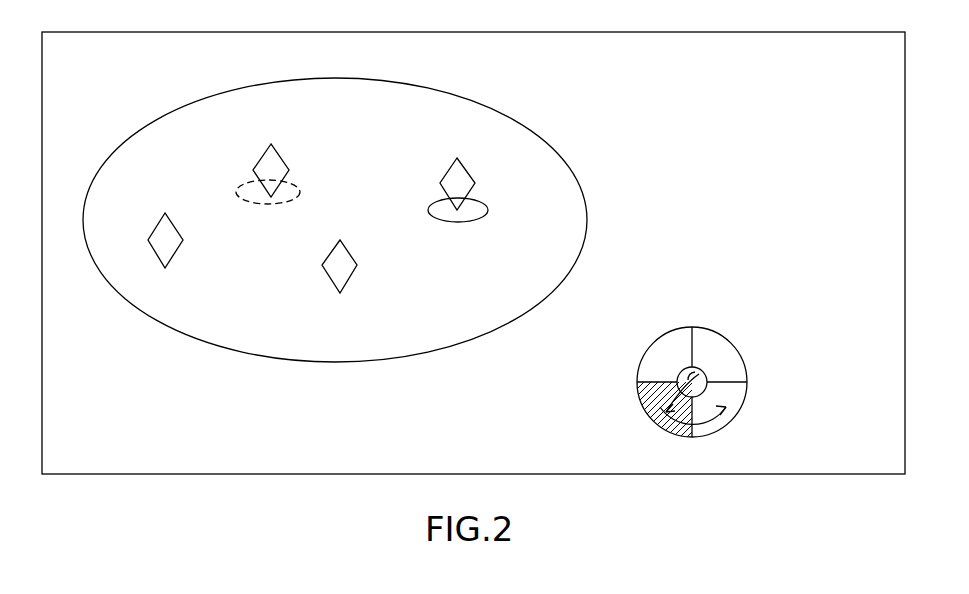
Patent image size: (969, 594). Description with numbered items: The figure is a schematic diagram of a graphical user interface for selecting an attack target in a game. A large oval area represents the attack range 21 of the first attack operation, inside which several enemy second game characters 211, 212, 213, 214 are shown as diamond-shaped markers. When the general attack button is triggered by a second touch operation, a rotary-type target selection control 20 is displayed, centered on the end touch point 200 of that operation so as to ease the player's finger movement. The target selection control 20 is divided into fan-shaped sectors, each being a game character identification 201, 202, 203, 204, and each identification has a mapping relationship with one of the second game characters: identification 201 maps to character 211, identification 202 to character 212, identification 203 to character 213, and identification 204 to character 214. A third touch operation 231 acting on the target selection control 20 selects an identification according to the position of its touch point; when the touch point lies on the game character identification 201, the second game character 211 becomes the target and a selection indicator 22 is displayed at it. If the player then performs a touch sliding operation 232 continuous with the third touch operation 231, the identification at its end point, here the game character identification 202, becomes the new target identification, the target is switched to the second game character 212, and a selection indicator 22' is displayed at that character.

The target selection control 20 is at (723, 335).
The attack range 21 is at (440, 90).
The selection indicator 22 is at (479, 227).
The selection indicator 22' is at (289, 209).
The end touch point 200 is at (706, 379).
The game character identification 201 is at (648, 412).
The game character identification 202 is at (733, 396).
The game character identification 203 is at (723, 356).
The game character identification 204 is at (670, 355).
The second game character 211 is at (461, 165).
The second game character 212 is at (279, 153).
The second game character 213 is at (346, 248).
The second game character 214 is at (172, 222).
The third touch operation 231 is at (680, 390).
The touch sliding operation 232 is at (708, 421).